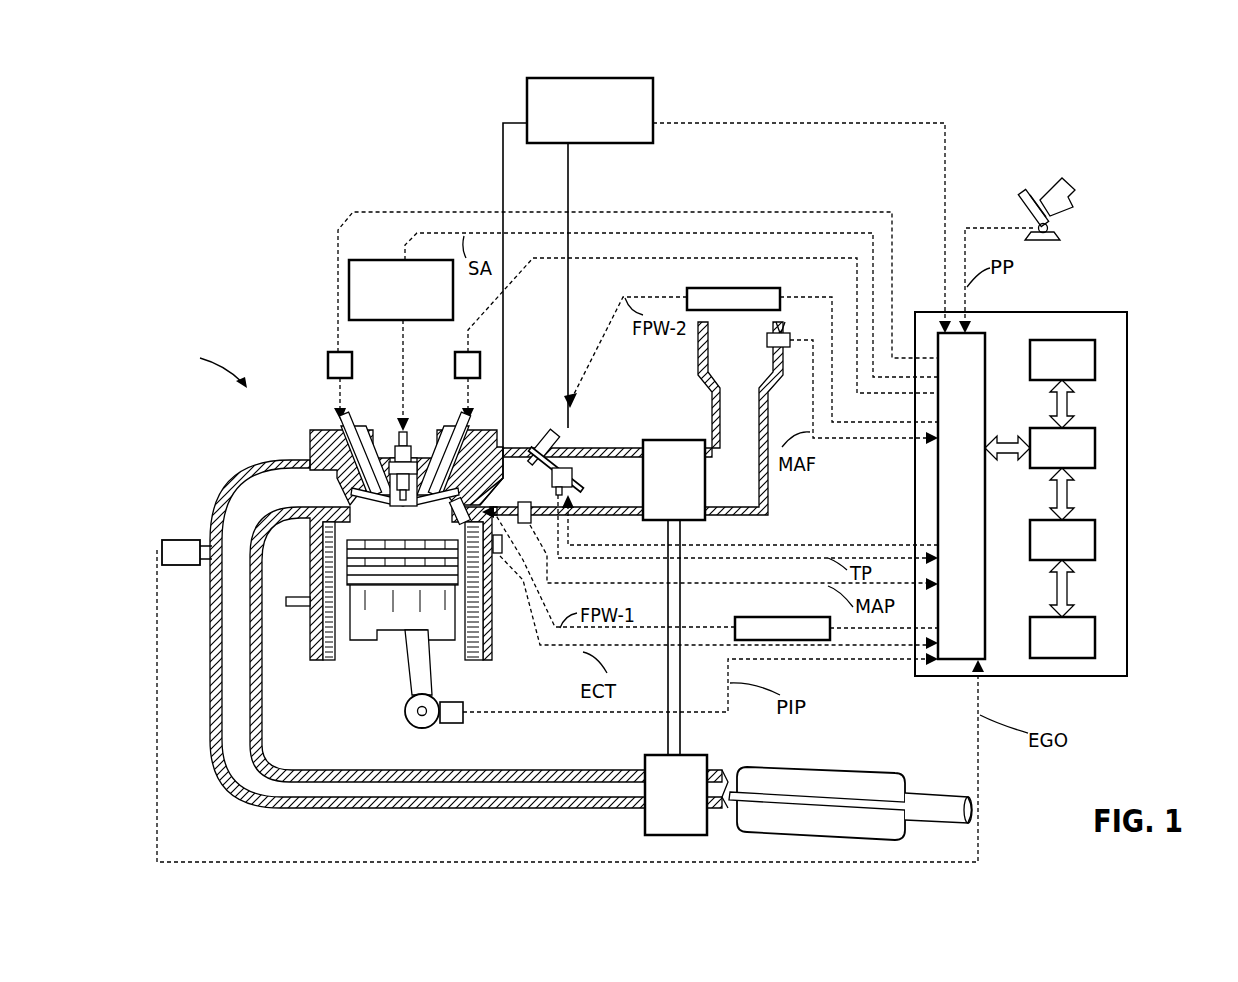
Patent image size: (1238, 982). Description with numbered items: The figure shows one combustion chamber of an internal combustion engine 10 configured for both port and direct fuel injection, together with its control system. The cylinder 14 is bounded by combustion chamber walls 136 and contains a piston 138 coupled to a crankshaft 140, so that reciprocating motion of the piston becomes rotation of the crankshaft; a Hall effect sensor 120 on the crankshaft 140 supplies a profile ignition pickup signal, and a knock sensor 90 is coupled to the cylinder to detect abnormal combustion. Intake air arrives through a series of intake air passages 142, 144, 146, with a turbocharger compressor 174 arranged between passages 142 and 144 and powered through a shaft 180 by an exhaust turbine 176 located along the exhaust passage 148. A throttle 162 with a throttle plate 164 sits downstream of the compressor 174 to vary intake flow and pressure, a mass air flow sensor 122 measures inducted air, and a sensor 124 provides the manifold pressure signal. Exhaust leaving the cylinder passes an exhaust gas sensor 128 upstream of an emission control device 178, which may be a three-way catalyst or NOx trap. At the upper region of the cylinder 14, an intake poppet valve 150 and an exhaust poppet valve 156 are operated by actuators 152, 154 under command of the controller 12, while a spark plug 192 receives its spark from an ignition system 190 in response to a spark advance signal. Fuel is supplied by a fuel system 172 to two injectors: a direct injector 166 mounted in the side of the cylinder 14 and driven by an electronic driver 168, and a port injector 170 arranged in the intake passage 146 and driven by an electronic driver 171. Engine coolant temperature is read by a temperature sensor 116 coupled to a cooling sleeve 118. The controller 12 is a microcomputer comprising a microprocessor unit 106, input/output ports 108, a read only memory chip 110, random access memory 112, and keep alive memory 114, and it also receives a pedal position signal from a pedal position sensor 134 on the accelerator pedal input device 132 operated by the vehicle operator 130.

The internal combustion engine 10 is at (212, 364).
The controller 12 is at (1118, 312).
The cylinder 14 is at (347, 527).
The knock sensor 90 is at (300, 606).
The microprocessor unit 106 is at (1097, 447).
The input/output ports 108 is at (988, 338).
The read only memory chip 110 is at (1097, 357).
The random access memory 112 is at (1097, 540).
The keep alive memory 114 is at (1097, 637).
The temperature sensor 116 is at (500, 558).
The cooling sleeve 118 is at (472, 618).
The Hall effect sensor 120 is at (452, 725).
The mass air flow sensor 122 is at (787, 333).
The manifold pressure sensor 124 is at (533, 527).
The exhaust gas sensor 128 is at (160, 540).
The vehicle operator 130 is at (1067, 192).
The input device 132 is at (1023, 200).
The pedal position sensor 134 is at (1060, 230).
The combustion chamber walls 136 is at (348, 660).
The piston 138 is at (387, 615).
The crankshaft 140 is at (410, 730).
The intake air passage 142 is at (757, 364).
The intake air passage 144 is at (632, 489).
The intake air passage 146 is at (541, 489).
The exhaust passage 148 is at (297, 499).
The intake poppet valve 150 is at (437, 493).
The actuator 152 is at (455, 364).
The actuator 154 is at (328, 358).
The exhaust poppet valve 156 is at (338, 462).
The throttle 162 is at (563, 468).
The throttle plate 164 is at (530, 448).
The fuel injector 166 is at (476, 510).
The electronic driver 168 is at (735, 617).
The fuel injector 170 is at (550, 435).
The electronic driver 171 is at (690, 290).
The fuel system 172 is at (652, 82).
The compressor 174 is at (658, 440).
The exhaust turbine 176 is at (645, 830).
The emission control device 178 is at (820, 767).
The shaft 180 is at (682, 718).
The ignition system 190 is at (357, 260).
The spark plug 192 is at (397, 447).